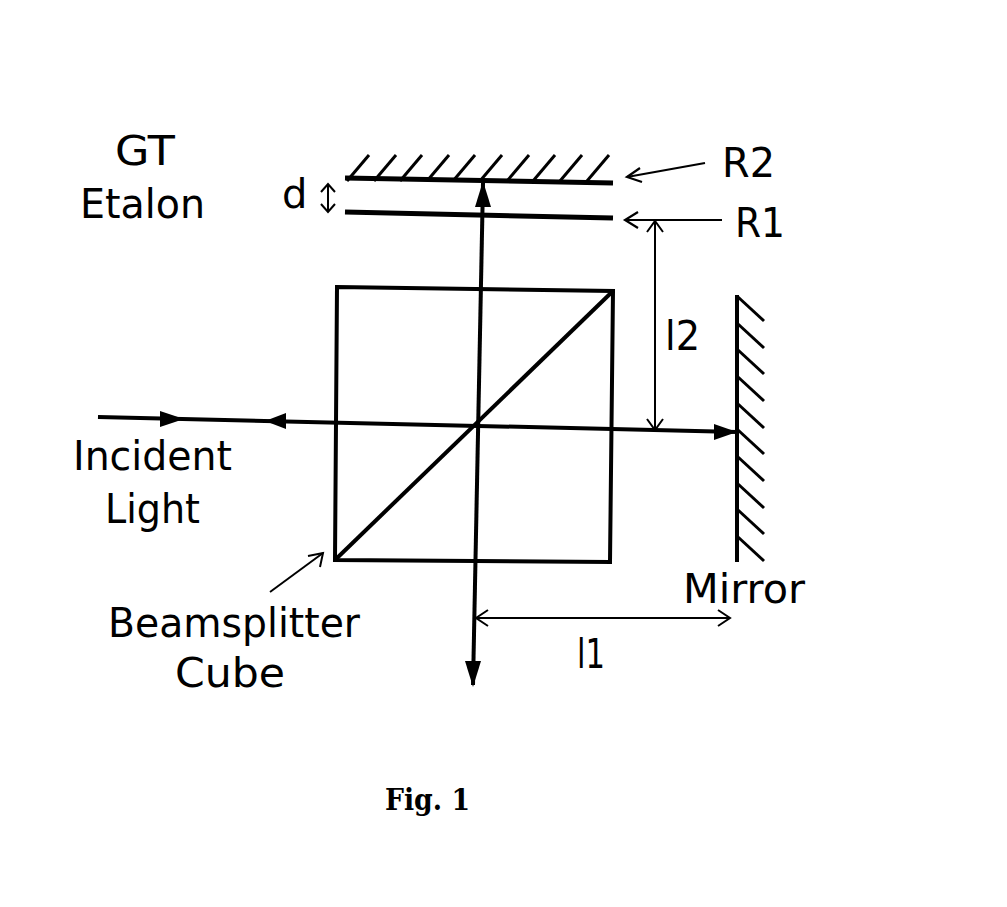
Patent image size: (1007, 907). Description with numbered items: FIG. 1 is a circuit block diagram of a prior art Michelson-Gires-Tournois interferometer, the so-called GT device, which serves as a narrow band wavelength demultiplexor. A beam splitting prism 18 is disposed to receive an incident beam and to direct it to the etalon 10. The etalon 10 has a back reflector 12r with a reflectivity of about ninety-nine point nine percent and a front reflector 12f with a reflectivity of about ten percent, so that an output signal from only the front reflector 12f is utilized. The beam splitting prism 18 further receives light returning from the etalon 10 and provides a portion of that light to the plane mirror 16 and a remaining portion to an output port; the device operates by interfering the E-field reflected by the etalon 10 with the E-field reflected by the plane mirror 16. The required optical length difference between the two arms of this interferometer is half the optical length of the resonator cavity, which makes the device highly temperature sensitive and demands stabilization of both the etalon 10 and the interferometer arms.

The etalon 10 is at (360, 190).
The back reflector 12r is at (533, 178).
The front reflector 12f is at (592, 217).
The plane mirror 16 is at (740, 505).
The beam splitting prism 18 is at (410, 562).